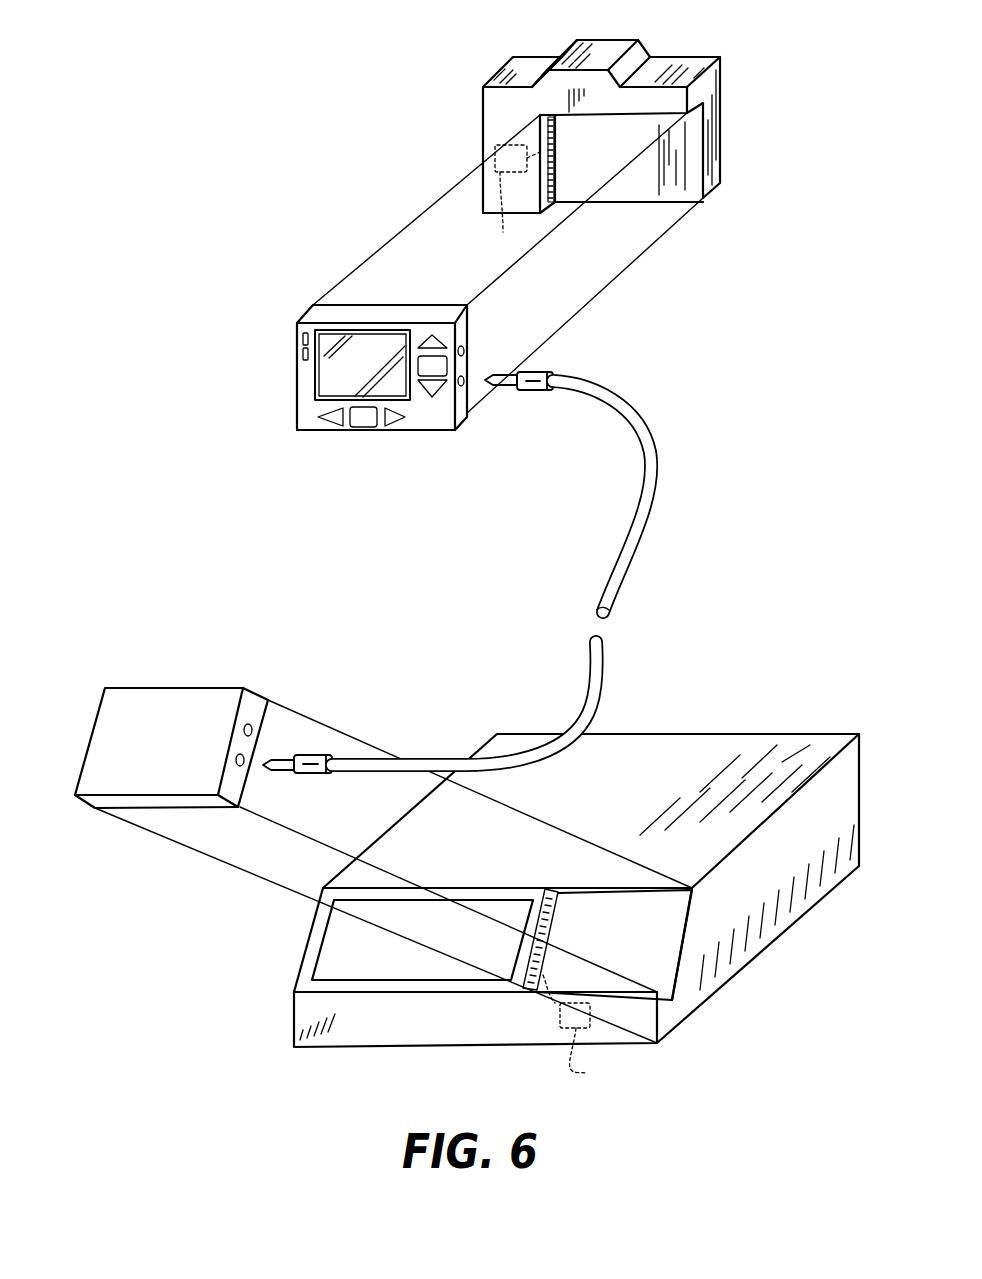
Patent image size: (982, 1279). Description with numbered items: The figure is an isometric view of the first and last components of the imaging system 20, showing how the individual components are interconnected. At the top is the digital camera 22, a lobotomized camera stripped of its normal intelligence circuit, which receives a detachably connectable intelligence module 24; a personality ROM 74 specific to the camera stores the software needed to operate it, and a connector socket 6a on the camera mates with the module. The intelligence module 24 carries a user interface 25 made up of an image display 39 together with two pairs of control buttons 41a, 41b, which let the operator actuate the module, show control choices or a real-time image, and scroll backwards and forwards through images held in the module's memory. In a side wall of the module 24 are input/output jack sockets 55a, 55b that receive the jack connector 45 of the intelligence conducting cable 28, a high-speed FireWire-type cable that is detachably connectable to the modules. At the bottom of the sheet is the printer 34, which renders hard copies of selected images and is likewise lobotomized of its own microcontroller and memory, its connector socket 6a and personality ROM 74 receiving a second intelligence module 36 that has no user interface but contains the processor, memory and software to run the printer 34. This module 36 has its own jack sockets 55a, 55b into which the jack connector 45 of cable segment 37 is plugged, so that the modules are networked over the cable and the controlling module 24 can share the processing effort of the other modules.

The imaging system 20 is at (337, 54).
The digital camera 22 is at (481, 106).
The connector socket 6a is at (553, 138).
The personality ROM 74 is at (542, 616).
The intelligence module 24 is at (340, 377).
The user interface 25 is at (345, 383).
The image display 39 is at (378, 376).
The control buttons 41a is at (398, 425).
The control buttons 41b is at (432, 336).
The input/output jack socket 55a is at (461, 350).
The input/output jack socket 55b is at (461, 386).
The jack connector 45 is at (543, 366).
The intelligence conducting cable 28 is at (628, 553).
The intelligence module 36 is at (105, 687).
The cable segment 37 is at (608, 689).
The printer 34 is at (303, 934).